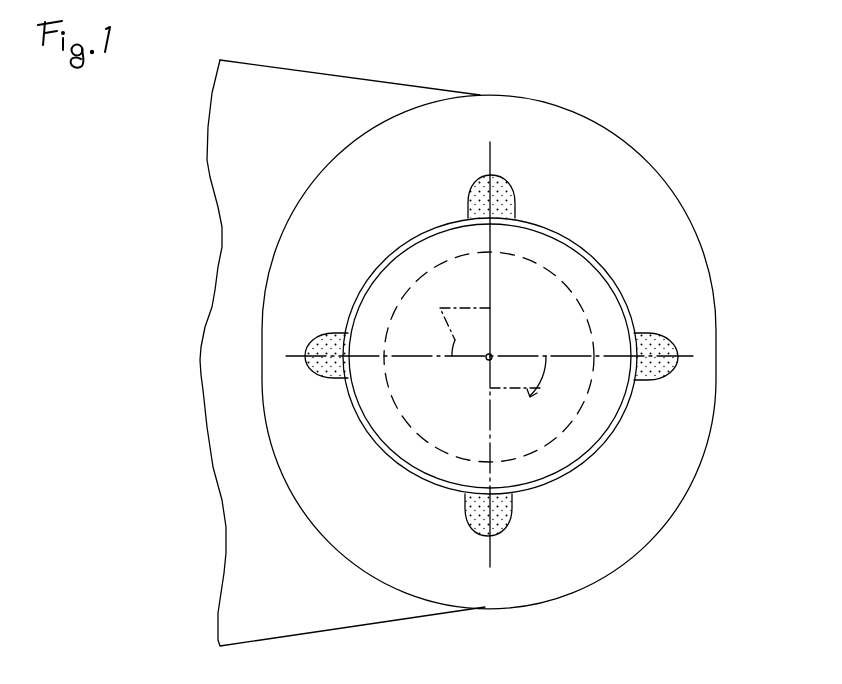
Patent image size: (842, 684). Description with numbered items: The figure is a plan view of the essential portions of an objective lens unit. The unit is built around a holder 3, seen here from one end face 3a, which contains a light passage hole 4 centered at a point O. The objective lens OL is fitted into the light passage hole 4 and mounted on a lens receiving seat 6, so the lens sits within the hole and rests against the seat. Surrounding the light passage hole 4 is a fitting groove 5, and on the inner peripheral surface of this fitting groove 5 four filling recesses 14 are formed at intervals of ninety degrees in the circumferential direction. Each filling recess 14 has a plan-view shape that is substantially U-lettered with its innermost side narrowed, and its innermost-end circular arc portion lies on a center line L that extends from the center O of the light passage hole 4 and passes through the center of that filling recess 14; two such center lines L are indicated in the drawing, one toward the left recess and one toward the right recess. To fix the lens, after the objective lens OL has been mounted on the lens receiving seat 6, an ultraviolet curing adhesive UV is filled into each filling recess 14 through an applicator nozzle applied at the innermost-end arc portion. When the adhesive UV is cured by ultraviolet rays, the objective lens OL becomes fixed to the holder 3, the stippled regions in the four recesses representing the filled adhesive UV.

The holder 3 is at (230, 372).
The end face of holder 3a is at (667, 470).
The light passage hole 4 is at (547, 272).
The fitting groove 5 is at (623, 292).
The lens receiving seat 6 is at (391, 459).
The filling recess 14 is at (328, 322).
The ultraviolet curing adhesive UV is at (505, 195).
The objective lens OL is at (434, 466).
The center of light passage hole O is at (486, 360).
The center line L is at (490, 358).